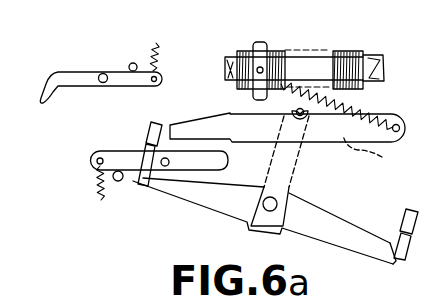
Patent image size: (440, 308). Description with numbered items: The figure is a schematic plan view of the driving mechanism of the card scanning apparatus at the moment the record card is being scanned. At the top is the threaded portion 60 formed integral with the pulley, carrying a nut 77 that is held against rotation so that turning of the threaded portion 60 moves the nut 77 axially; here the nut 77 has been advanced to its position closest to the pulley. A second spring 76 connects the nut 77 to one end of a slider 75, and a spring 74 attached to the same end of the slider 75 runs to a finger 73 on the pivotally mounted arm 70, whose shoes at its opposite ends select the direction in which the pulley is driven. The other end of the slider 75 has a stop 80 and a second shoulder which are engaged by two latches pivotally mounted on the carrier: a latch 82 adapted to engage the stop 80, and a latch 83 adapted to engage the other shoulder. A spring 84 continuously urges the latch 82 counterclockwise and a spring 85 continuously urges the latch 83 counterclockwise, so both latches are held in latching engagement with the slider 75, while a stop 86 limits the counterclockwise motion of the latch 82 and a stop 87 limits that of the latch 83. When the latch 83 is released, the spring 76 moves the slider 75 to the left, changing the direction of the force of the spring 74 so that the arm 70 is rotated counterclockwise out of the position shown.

The threaded portion 60 is at (343, 52).
The arm 70 is at (323, 244).
The finger 73 is at (296, 175).
The spring 74 is at (373, 151).
The slider 75 is at (335, 143).
The second spring 76 is at (357, 108).
The nut 77 is at (261, 42).
The stop 80 is at (240, 114).
The latch 82 is at (77, 71).
The latch 83 is at (107, 151).
The spring 84 is at (158, 48).
The spring 85 is at (97, 192).
The stop 86 is at (133, 62).
The stop 87 is at (118, 181).